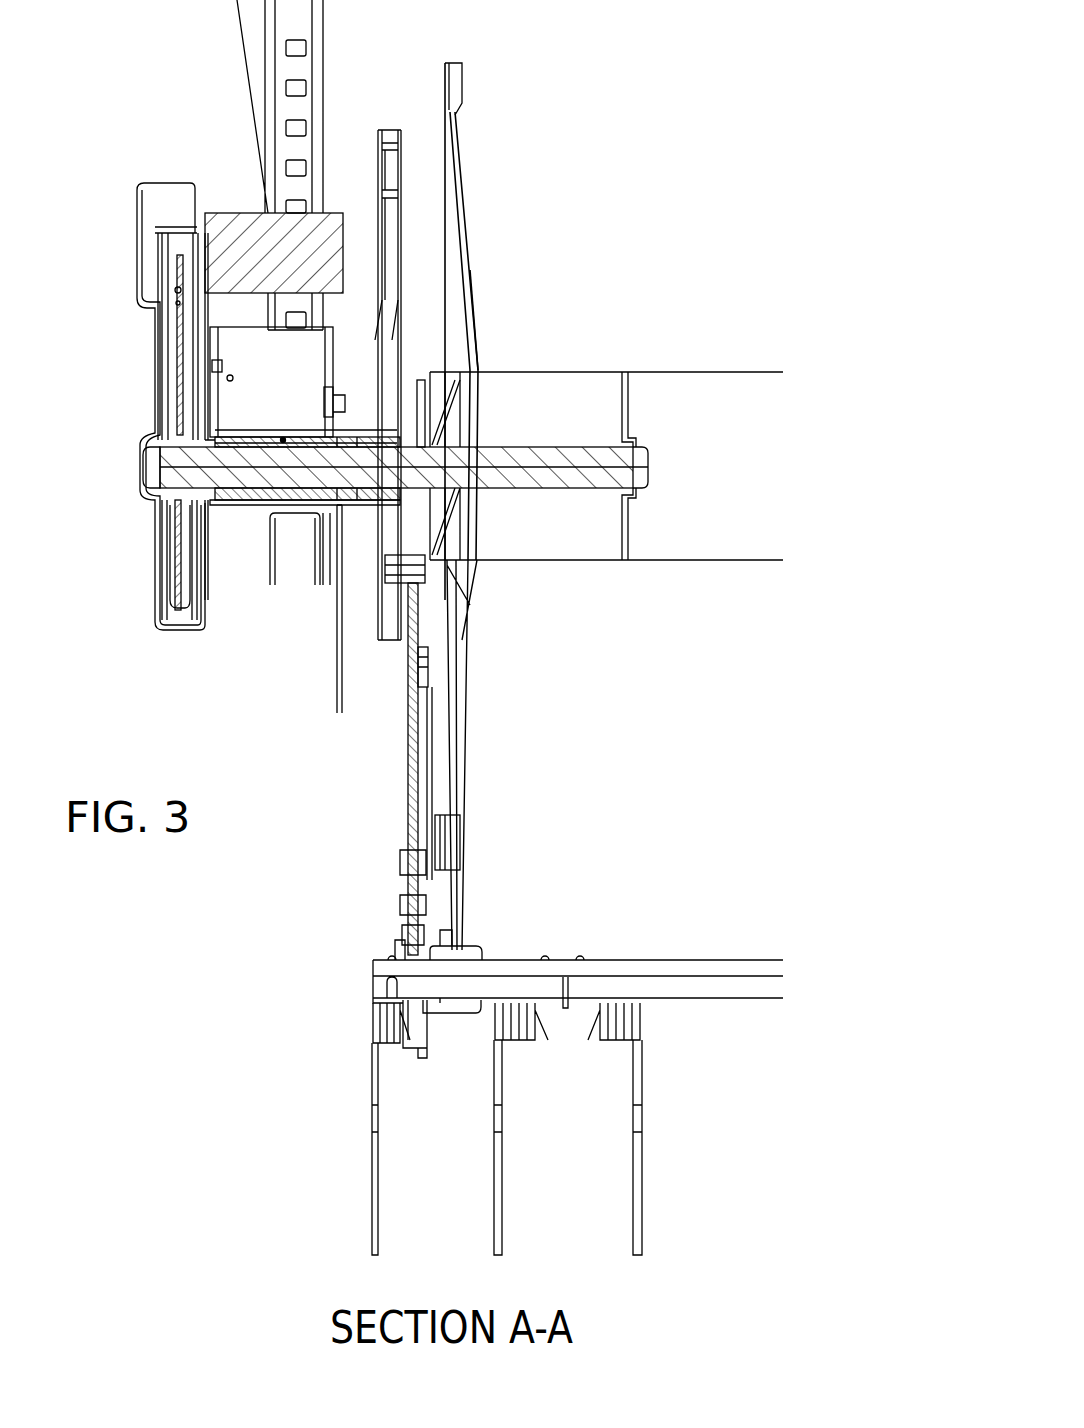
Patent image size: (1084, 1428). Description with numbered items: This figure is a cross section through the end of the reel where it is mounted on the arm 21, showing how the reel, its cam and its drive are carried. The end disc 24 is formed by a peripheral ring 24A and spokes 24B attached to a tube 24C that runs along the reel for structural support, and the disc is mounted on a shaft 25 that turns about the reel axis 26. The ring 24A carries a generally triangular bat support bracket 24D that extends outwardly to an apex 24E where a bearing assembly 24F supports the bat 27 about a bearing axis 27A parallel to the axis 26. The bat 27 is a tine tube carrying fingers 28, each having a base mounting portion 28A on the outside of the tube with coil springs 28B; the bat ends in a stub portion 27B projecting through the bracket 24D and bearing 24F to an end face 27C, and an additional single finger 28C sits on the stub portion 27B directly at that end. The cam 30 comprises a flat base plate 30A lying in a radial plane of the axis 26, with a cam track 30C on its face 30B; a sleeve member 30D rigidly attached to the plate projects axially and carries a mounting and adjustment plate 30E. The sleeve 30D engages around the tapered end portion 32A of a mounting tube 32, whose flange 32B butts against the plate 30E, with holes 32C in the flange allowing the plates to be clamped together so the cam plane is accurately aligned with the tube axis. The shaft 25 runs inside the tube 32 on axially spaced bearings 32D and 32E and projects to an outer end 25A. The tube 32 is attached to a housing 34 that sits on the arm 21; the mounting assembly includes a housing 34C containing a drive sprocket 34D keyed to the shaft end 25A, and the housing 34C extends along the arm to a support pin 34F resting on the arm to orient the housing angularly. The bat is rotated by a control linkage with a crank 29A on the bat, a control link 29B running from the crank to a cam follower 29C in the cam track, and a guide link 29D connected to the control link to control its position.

The arm 21 is at (265, 48).
The end disc 24 is at (453, 96).
The peripheral ring 24A is at (458, 70).
The spokes 24B is at (460, 272).
The tube 24C is at (708, 372).
The bat support bracket 24D is at (469, 907).
The apex 24E is at (420, 1058).
The bearing assembly 24F is at (465, 950).
The shaft 25 is at (555, 483).
The outer end of shaft 25A is at (157, 457).
The axis 26 is at (587, 470).
The bat 27 is at (750, 960).
The bearing axis 27A is at (688, 960).
The stub portion 27B is at (387, 960).
The end face 27C is at (373, 966).
The fingers 28 is at (642, 1090).
The base mounting portion 28A is at (567, 1013).
The coil spring 28B is at (640, 1022).
The single finger 28C is at (373, 1068).
The crank 29A is at (410, 908).
The control link 29B is at (412, 742).
The cam follower 29C is at (400, 637).
The guide link 29D is at (412, 738).
The cam 30 is at (390, 130).
The base plate 30A is at (385, 245).
The face of plate 30B is at (380, 259).
The cam track 30C is at (398, 178).
The sleeve member 30D is at (425, 372).
The mounting and adjustment plate 30E is at (337, 688).
The mounting tube 32 is at (283, 440).
The end portion of tube 32A is at (338, 585).
The flange 32B is at (330, 398).
The holes 32C is at (336, 400).
The bearing 32D is at (232, 512).
The bearing 32E is at (395, 345).
The housing 34 is at (215, 366).
The housing 34C is at (158, 557).
The drive sprocket 34D is at (187, 410).
The support pin 34F is at (235, 215).